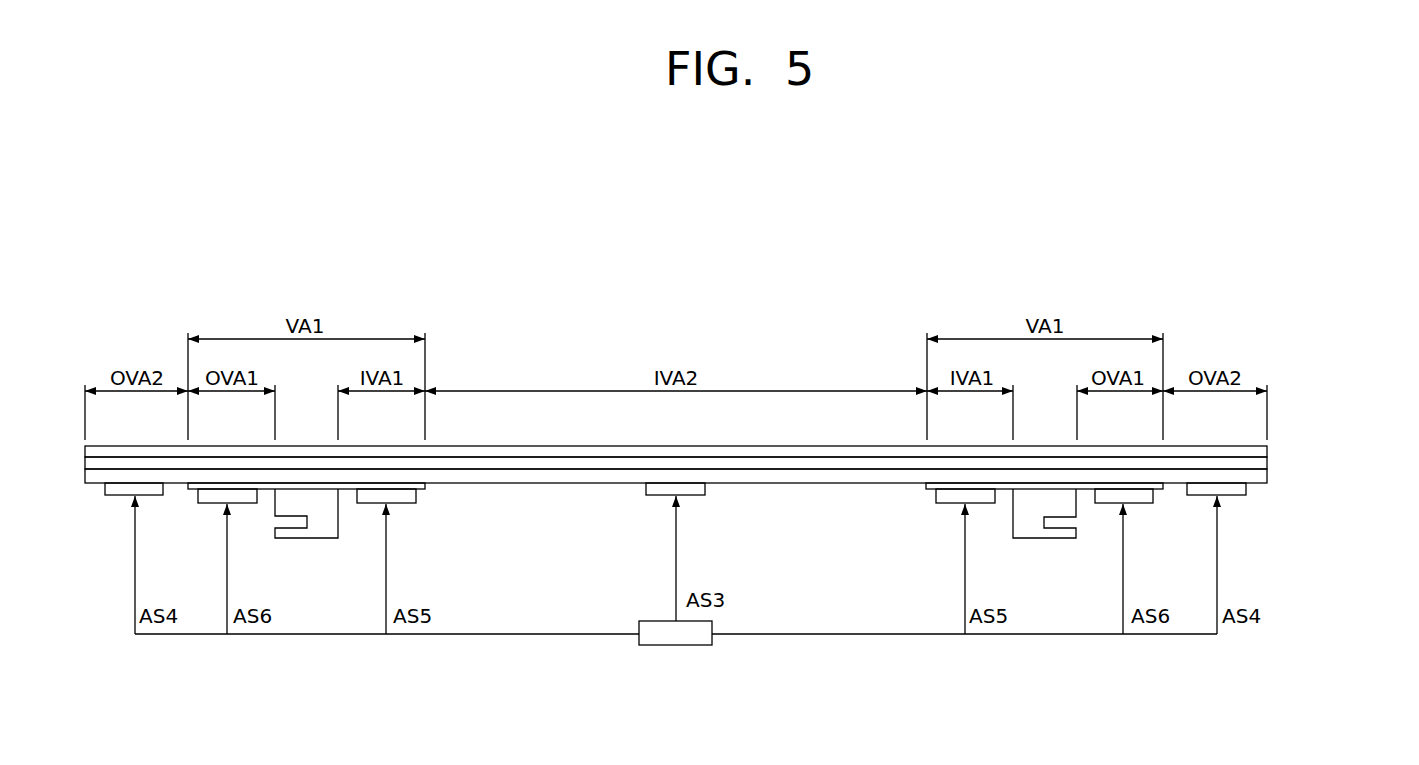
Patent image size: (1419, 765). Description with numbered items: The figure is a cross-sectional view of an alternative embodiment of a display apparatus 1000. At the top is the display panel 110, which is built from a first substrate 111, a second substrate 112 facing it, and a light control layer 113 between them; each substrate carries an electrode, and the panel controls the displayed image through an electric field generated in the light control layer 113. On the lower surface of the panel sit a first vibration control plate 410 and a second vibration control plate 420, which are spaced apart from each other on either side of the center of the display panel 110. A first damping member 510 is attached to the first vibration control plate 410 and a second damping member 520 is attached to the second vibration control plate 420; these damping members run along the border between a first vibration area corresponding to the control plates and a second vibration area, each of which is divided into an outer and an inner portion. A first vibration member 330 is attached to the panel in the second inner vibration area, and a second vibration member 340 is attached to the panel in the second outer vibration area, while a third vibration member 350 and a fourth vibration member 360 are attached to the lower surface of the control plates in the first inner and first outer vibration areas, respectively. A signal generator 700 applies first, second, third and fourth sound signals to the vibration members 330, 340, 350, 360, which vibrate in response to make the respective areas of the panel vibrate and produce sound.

The display device 1000 is at (880, 316).
The display panel 110 is at (1347, 426).
The first substrate 111 is at (1257, 475).
The second substrate 112 is at (1255, 452).
The light control layer 113 is at (1257, 463).
The first vibration member 330 is at (697, 490).
The second vibration member 340 is at (153, 490).
The third vibration member 350 is at (403, 497).
The fourth vibration member 360 is at (242, 497).
The first vibration control plate 410 is at (418, 487).
The second vibration control plate 420 is at (927, 487).
The first damping member 510 is at (320, 528).
The second damping member 520 is at (1033, 528).
The signal generator 700 is at (682, 637).